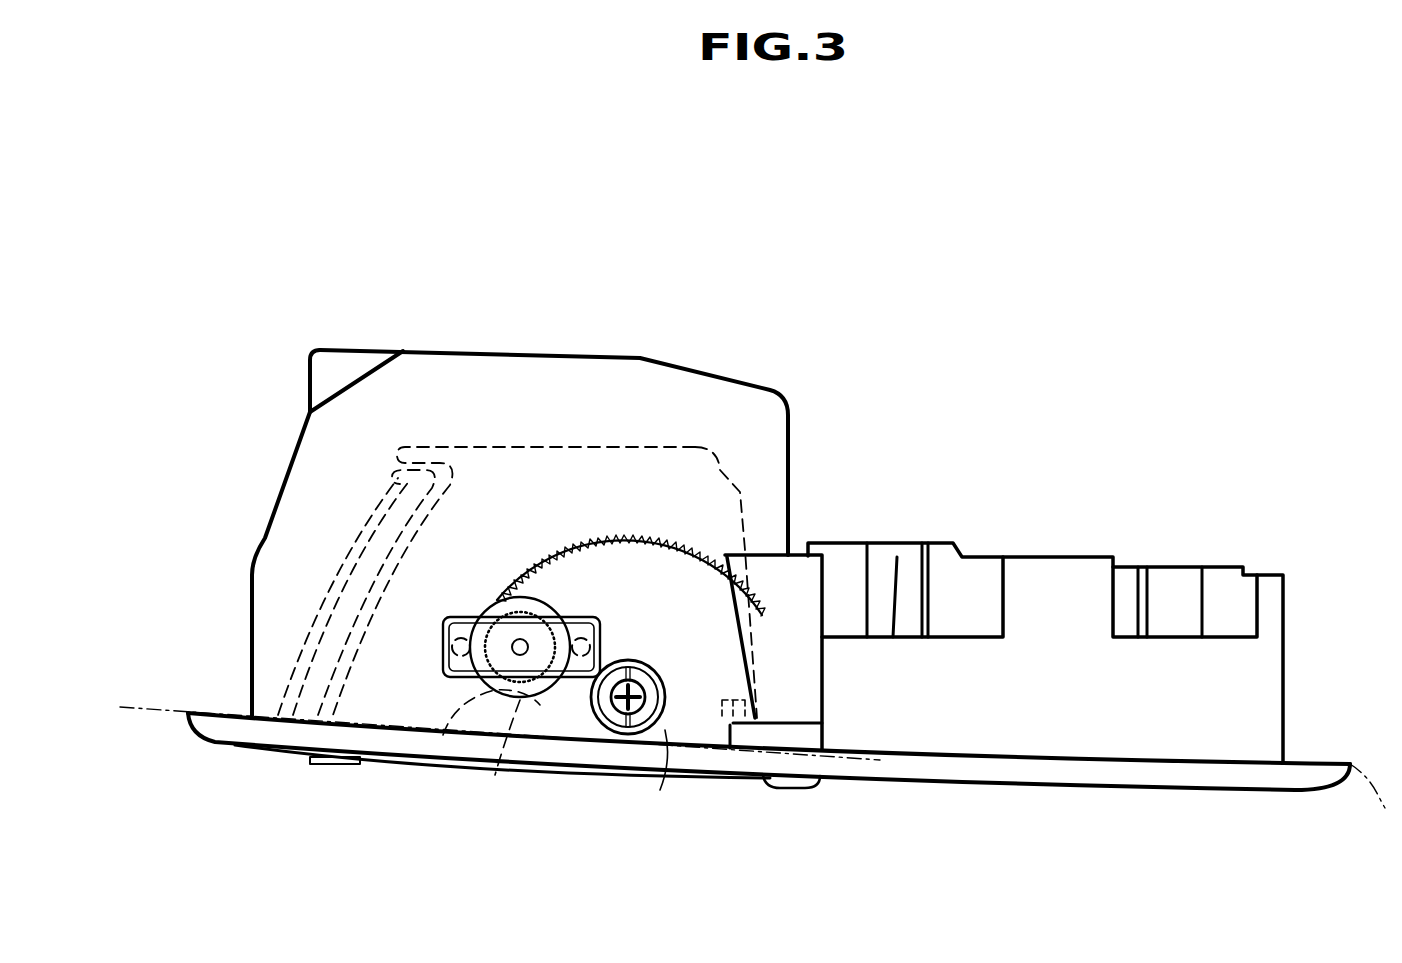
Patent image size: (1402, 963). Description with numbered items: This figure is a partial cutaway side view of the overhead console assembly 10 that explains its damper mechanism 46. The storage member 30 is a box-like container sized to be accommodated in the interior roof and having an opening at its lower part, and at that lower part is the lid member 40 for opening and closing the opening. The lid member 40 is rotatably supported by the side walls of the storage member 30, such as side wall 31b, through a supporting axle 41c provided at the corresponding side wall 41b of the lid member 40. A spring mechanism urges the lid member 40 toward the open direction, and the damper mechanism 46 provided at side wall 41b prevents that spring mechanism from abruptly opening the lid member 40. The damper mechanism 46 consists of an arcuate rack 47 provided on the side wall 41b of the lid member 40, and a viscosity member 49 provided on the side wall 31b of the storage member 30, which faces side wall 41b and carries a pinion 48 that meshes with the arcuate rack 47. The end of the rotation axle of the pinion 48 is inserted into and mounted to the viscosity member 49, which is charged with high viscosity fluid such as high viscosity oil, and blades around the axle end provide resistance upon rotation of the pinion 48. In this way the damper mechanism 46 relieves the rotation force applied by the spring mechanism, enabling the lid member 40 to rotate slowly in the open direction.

The overhead console assembly 10 is at (277, 235).
The storage member 30 is at (441, 347).
The side wall 31b is at (690, 483).
The lid member 40 is at (597, 768).
The side wall 41b is at (512, 445).
The supporting axle 41c is at (657, 736).
The damper mechanism 46 is at (636, 500).
The arcuate rack 47 is at (600, 538).
The pinion 48 is at (478, 672).
The viscosity member 49 is at (518, 657).